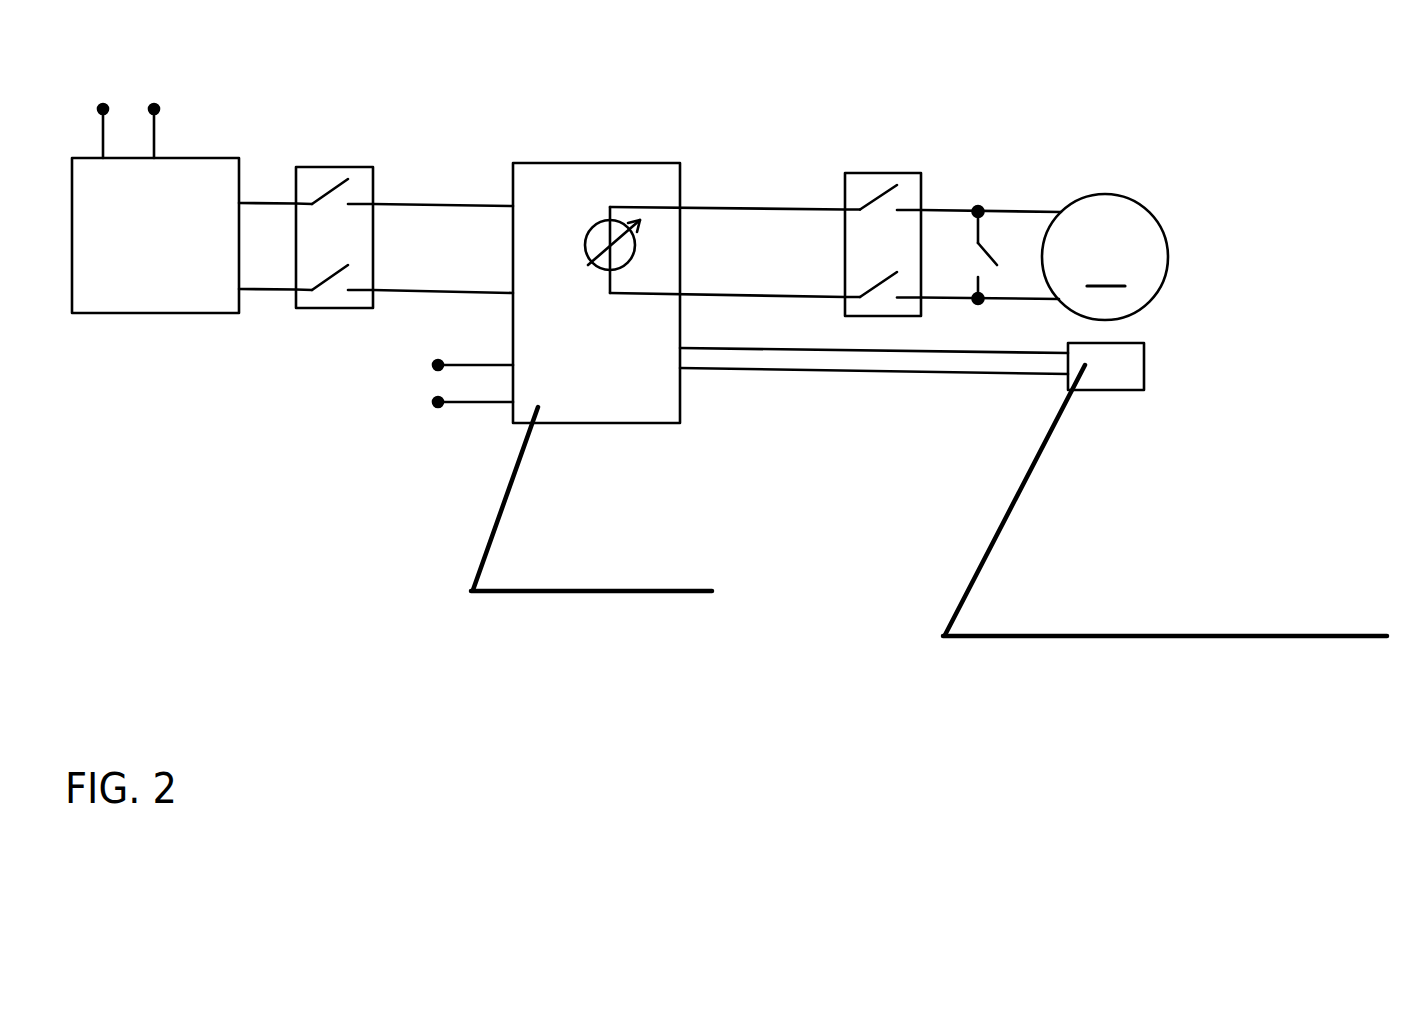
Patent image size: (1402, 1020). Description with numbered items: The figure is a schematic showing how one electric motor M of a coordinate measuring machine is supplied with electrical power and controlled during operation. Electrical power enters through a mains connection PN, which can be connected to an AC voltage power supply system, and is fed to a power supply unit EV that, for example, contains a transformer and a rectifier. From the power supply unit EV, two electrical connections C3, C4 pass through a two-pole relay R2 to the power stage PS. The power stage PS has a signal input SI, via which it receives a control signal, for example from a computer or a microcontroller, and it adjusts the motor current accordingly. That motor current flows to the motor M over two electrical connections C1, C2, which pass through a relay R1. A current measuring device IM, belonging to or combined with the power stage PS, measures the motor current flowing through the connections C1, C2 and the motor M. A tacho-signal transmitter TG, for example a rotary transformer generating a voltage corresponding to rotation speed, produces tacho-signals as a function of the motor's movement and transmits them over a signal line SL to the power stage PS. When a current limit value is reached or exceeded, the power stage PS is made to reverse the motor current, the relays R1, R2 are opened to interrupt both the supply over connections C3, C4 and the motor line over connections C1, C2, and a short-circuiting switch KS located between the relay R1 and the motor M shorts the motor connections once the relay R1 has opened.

The power supply unit EV is at (103, 313).
The mains connection PN is at (128, 92).
The relay R2 is at (335, 308).
The electrical connection C3 is at (413, 203).
The electrical connection C4 is at (412, 290).
The power stage PS is at (588, 424).
The signal input SI is at (413, 391).
The current measuring device IM is at (586, 240).
The electrical connection C1 is at (728, 207).
The electrical connection C2 is at (727, 295).
The relay R1 is at (870, 171).
The short-circuiting switch KS is at (993, 247).
The electric motor M is at (1105, 257).
The signal line SL is at (820, 372).
The tacho-signal transmitter TG is at (1113, 392).